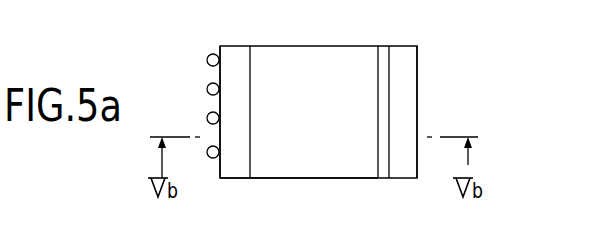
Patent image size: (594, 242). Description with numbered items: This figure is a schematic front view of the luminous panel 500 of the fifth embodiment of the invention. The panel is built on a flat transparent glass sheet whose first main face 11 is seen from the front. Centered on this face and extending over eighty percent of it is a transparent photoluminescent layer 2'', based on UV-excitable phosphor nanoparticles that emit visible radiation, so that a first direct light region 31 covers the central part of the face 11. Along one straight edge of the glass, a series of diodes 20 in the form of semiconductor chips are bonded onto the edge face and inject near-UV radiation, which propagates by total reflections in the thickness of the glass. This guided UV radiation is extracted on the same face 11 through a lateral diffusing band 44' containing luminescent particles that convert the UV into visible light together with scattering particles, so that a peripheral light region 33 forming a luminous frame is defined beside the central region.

The luminous panel 500 is at (151, 91).
The diodes 20 is at (207, 118).
The first main face 11 is at (230, 163).
The transparent photoluminescent layer 2'' is at (264, 134).
The first direct light region 31 is at (345, 160).
The light region 33 is at (405, 160).
The lateral diffusing band 44' is at (442, 112).